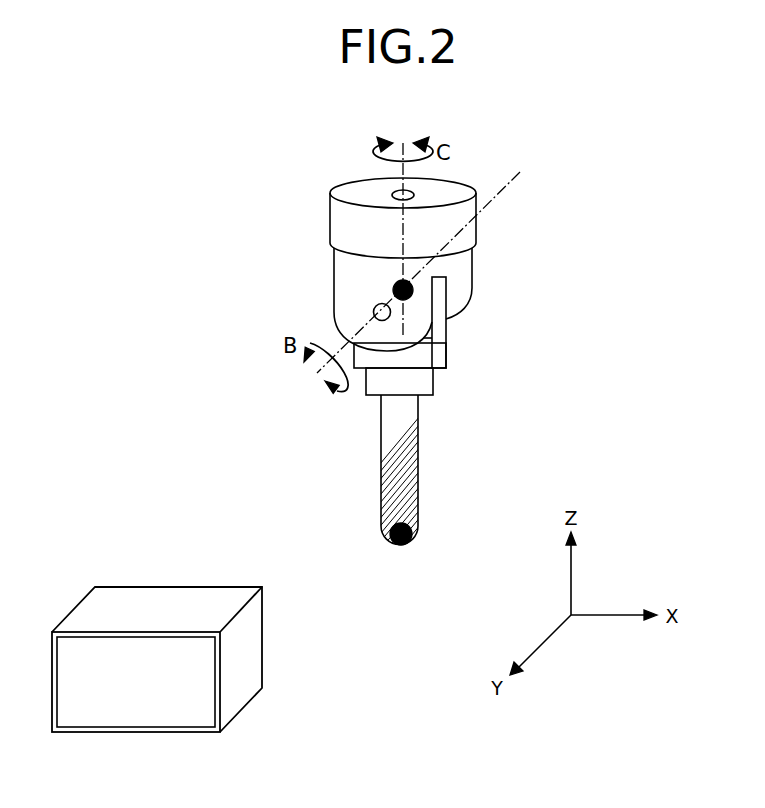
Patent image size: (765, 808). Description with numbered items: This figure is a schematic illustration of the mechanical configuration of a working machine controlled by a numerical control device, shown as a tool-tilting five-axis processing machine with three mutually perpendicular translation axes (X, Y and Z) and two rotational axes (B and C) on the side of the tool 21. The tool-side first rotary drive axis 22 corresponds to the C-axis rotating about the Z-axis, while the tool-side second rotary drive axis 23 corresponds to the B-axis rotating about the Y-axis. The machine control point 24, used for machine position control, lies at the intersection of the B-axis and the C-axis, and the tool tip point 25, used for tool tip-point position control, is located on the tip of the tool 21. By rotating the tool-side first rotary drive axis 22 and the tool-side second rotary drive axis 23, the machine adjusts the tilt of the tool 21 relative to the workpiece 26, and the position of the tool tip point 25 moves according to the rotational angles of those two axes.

The tool 21 is at (447, 333).
The tool-side first rotary drive axis 22 is at (395, 196).
The tool-side second rotary drive axis 23 is at (373, 313).
The machine control point 24 is at (396, 290).
The tool tip point 25 is at (412, 530).
The workpiece 26 is at (263, 630).